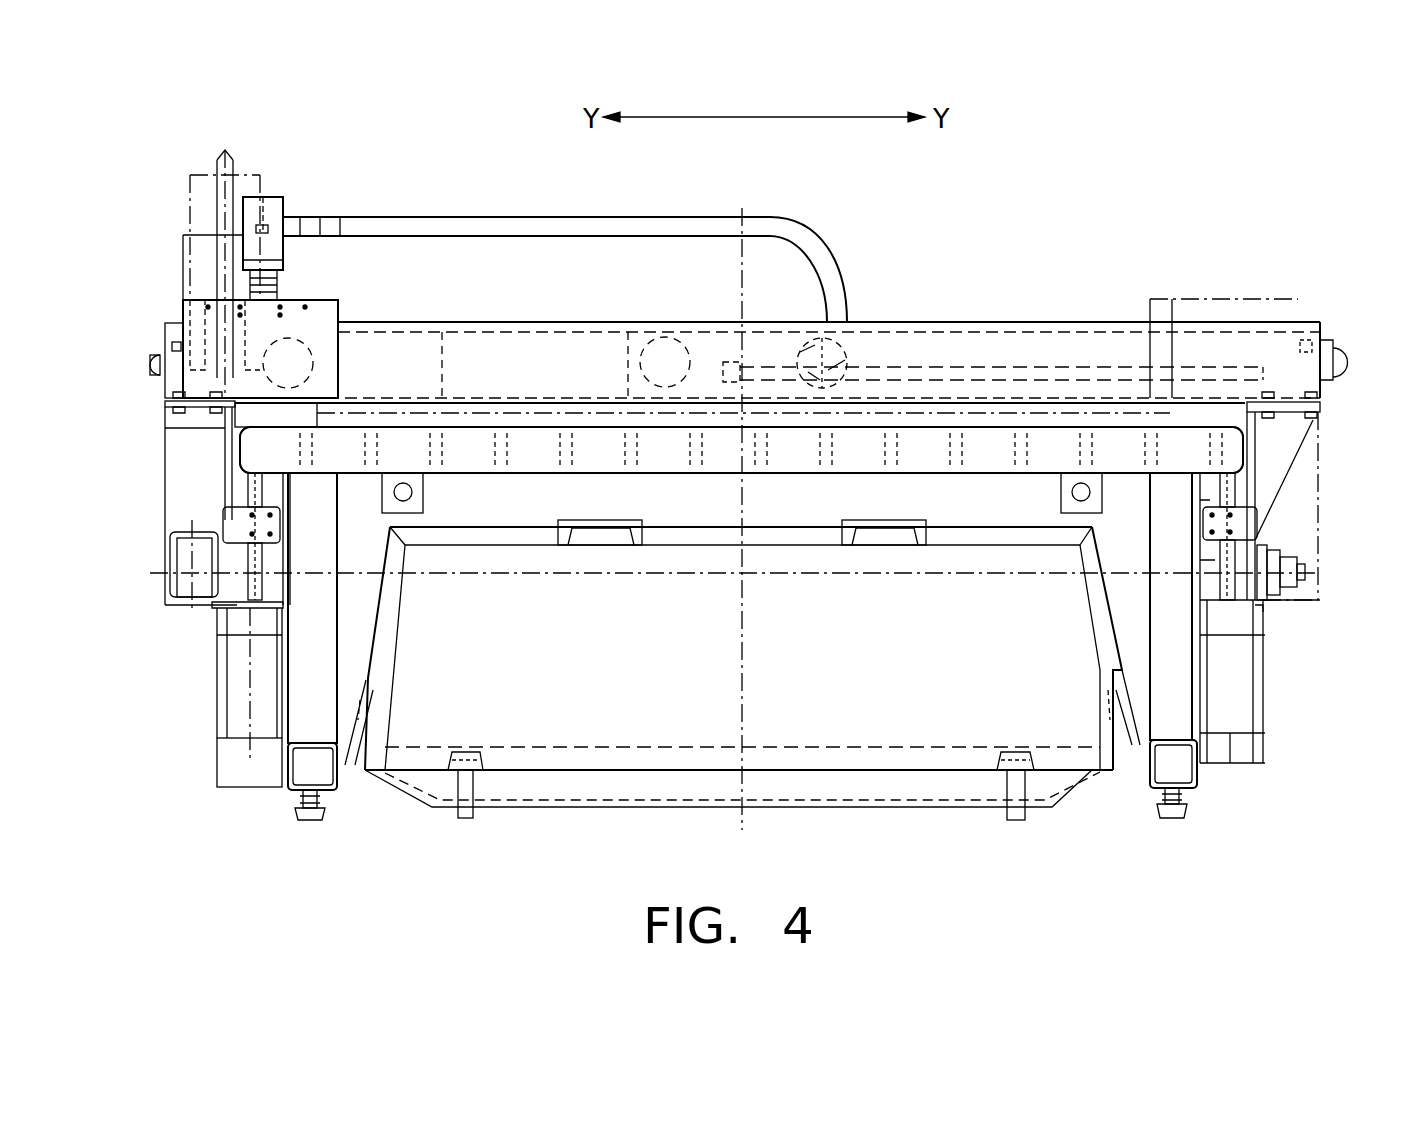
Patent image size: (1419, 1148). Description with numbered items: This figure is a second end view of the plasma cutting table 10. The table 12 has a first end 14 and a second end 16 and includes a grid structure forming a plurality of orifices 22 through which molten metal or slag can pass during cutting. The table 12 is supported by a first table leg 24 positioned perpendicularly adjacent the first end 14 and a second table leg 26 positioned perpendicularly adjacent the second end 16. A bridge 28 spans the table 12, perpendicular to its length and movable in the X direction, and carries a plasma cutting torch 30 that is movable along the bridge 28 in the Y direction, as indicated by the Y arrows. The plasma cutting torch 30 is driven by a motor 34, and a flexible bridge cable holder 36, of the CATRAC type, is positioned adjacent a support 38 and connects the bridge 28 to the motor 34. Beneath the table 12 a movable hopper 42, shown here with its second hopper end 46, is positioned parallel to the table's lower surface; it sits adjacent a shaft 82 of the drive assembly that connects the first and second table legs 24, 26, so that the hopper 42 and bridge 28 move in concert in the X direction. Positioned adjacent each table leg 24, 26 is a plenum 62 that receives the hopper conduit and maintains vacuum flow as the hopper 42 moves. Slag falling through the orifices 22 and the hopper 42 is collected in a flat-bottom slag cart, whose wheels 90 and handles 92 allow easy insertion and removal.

The plasma cutting table 10 is at (1350, 295).
The table 12 is at (1060, 440).
The first end 14 is at (257, 453).
The second end 16 is at (1253, 450).
The orifices 22 is at (370, 440).
The first table leg 24 is at (303, 685).
The second table leg 26 is at (1180, 703).
The bridge 28 is at (1065, 322).
The plasma cutting torch 30 is at (205, 325).
The motor 34 is at (170, 558).
The flexible bridge cable holder 36 is at (838, 262).
The support 38 is at (925, 372).
The movable hopper 42 is at (375, 695).
The second hopper end 46 is at (1175, 675).
The plenum 62 is at (348, 765).
The shaft 82 is at (1305, 566).
The wheels 90 is at (478, 812).
The handles 92 is at (885, 530).